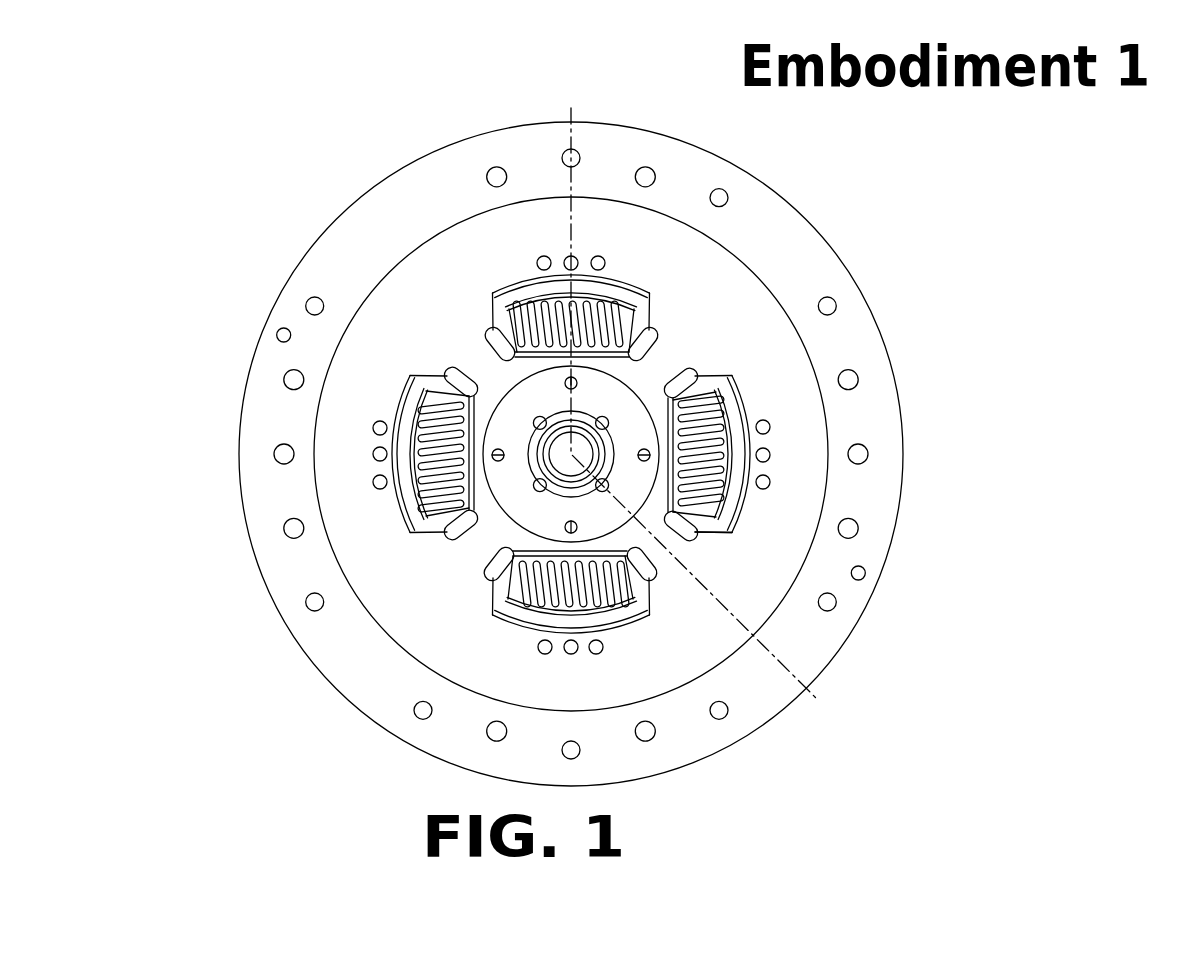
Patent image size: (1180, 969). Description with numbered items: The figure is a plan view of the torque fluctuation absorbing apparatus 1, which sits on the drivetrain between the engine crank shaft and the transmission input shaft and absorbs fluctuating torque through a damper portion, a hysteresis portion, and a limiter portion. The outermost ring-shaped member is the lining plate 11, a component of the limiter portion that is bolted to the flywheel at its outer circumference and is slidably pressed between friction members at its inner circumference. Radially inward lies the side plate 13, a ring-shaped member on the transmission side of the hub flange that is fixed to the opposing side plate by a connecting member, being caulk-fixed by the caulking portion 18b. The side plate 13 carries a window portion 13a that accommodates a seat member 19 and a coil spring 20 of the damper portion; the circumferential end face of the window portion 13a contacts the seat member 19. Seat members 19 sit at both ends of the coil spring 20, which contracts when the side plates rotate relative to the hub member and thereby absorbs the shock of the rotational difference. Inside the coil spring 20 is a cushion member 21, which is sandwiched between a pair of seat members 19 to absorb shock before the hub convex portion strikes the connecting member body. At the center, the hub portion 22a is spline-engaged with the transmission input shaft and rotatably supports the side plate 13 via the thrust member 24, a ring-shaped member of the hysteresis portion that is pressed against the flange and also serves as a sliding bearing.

The torque fluctuation absorbing apparatus 1 is at (917, 166).
The lining plate 11 is at (599, 454).
The side plate 13 is at (528, 454).
The window portion 13a is at (829, 537).
The caulking portion 18b is at (673, 455).
The seat member 19 is at (333, 448).
The coil spring 20 is at (327, 454).
The cushion member 21 is at (322, 457).
The hub portion 22a is at (540, 492).
The thrust member 24 is at (597, 413).